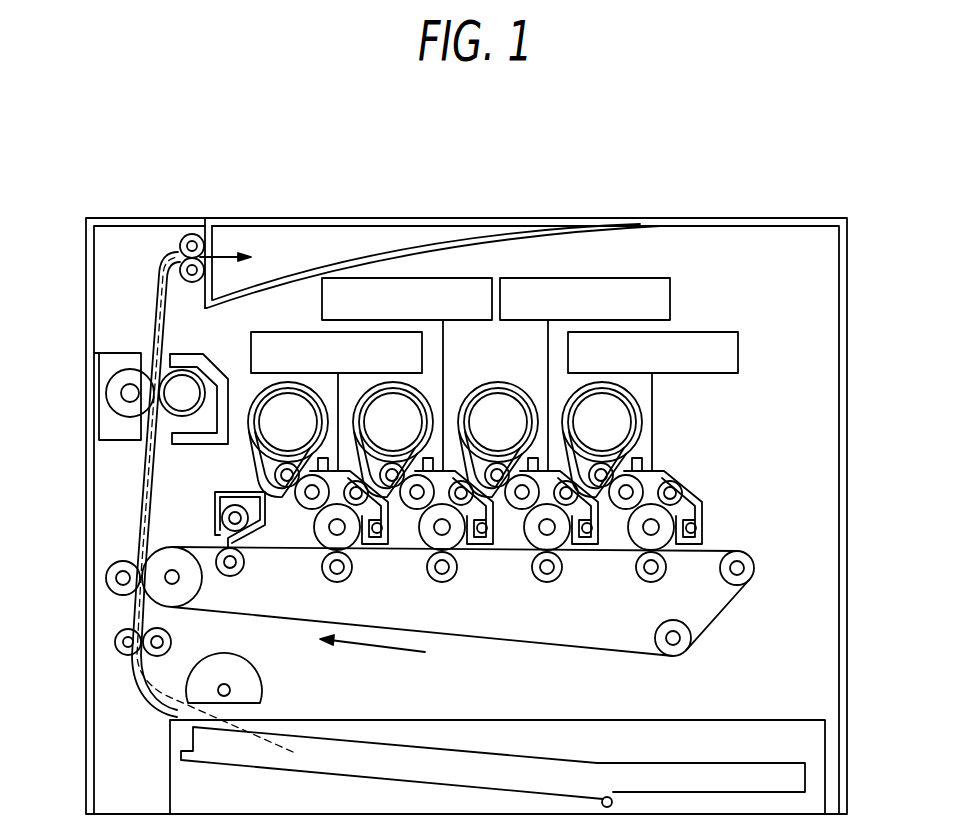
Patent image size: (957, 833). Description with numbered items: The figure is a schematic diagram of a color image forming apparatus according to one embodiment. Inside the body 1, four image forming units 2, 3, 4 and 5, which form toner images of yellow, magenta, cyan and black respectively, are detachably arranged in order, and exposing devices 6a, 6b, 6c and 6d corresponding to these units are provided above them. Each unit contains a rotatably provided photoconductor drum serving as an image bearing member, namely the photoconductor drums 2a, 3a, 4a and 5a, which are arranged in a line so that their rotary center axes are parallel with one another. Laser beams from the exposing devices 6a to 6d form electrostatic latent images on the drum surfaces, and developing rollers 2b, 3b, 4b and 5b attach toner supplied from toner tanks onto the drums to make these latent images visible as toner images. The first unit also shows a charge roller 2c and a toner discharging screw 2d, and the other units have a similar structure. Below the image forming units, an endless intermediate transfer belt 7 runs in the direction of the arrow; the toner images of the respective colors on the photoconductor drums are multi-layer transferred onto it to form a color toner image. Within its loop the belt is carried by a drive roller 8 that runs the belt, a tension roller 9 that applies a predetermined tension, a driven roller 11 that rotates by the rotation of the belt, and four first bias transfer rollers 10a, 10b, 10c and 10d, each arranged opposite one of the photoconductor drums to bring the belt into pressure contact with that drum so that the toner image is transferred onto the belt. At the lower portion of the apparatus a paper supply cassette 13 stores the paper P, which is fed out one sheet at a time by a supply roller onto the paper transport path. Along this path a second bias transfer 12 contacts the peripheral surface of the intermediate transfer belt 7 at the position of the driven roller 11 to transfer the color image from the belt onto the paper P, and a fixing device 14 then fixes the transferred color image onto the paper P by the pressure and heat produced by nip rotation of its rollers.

The body 1 is at (144, 218).
The image forming unit 2 is at (249, 440).
The photoconductor drum 2a is at (316, 546).
The developing roller 2b is at (311, 510).
The charge roller 2c is at (356, 481).
The toner discharging screw 2d is at (375, 548).
The image forming unit 3 is at (428, 388).
The photoconductor drum 3a is at (434, 548).
The developing roller 3b is at (418, 510).
The image forming unit 4 is at (501, 385).
The photoconductor drum 4a is at (539, 547).
The developing roller 4b is at (521, 510).
The image forming unit 5 is at (653, 424).
The photoconductor drum 5a is at (644, 545).
The developing roller 5b is at (620, 509).
The exposing device 6a is at (251, 335).
The exposing device 6b is at (322, 308).
The exposing device 6c is at (670, 298).
The exposing device 6d is at (738, 352).
The intermediate transfer belt 7 is at (497, 642).
The drive roller 8 is at (752, 556).
The tension roller 9 is at (686, 650).
The first bias transfer roller 10a is at (338, 583).
The first bias transfer roller 10b is at (445, 583).
The first bias transfer roller 10c is at (550, 583).
The first bias transfer roller 10d is at (656, 582).
The driven roller 11 is at (183, 596).
The second bias transfer 12 is at (123, 561).
The paper supply cassette 13 is at (803, 720).
The fixing device 14 is at (121, 354).
The paper P is at (298, 750).